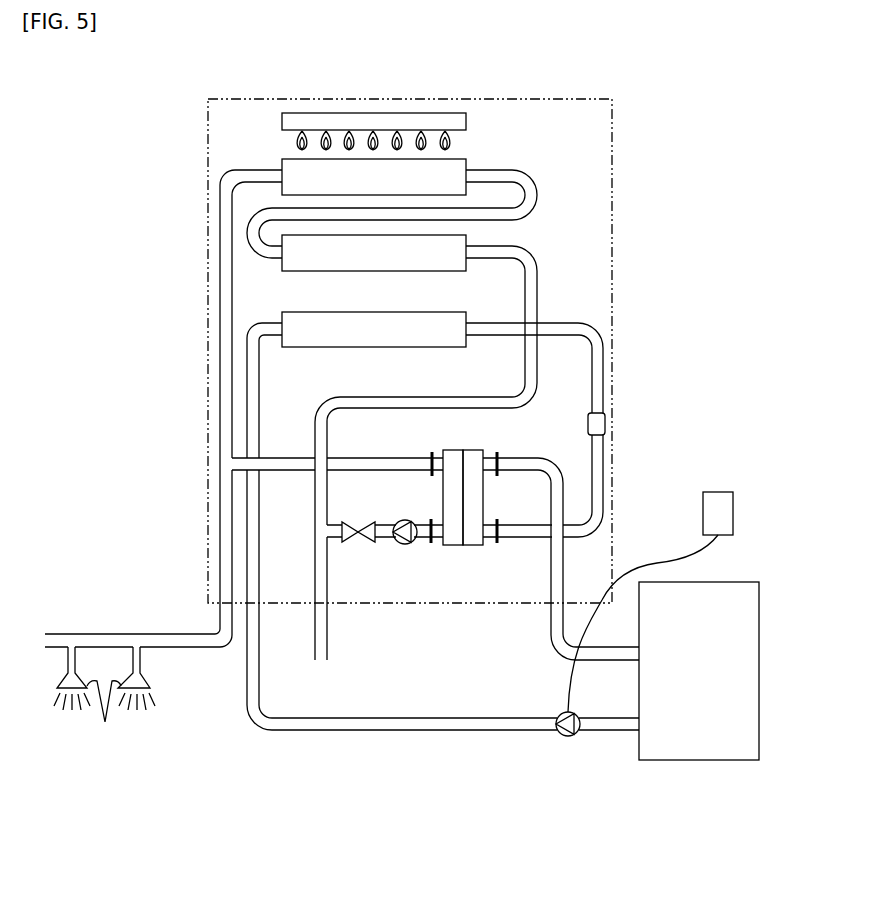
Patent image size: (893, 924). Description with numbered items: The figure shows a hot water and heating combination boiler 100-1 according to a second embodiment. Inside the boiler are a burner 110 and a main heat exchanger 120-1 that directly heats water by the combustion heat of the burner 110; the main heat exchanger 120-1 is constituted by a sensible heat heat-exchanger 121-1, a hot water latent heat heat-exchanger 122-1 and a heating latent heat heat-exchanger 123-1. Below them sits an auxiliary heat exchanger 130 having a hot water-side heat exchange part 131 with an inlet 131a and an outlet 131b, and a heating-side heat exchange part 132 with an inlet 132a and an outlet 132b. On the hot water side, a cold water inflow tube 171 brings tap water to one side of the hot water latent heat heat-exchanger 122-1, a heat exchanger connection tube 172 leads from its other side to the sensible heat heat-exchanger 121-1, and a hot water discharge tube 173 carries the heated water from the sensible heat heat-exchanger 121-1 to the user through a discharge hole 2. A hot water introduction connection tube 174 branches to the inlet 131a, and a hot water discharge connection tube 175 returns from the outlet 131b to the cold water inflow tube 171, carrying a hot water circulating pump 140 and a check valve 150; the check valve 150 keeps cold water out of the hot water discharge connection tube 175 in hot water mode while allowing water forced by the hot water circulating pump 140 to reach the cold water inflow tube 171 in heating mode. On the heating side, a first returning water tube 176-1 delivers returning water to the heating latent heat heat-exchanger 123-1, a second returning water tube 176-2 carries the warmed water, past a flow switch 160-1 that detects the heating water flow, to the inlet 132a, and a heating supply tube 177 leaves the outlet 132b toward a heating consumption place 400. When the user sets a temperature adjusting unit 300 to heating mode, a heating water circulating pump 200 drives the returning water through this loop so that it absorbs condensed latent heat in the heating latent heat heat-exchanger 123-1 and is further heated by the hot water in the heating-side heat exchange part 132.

The discharge hole 2 is at (104, 697).
The hot water and heating combination boiler 100-1 is at (208, 108).
The burner 110 is at (417, 118).
The main heat exchanger 120-1 is at (254, 253).
The sensible heat heat-exchanger 121-1 is at (215, 172).
The hot water latent heat heat-exchanger 122-1 is at (262, 235).
The heating latent heat heat-exchanger 123-1 is at (282, 312).
The auxiliary heat exchanger 130 is at (557, 500).
The hot water-side heat exchange part 131 is at (455, 483).
The inlet of hot water-side heat exchange part 131a is at (432, 460).
The outlet of hot water-side heat exchange part 131b is at (437, 540).
The heating-side heat exchange part 132 is at (475, 507).
The inlet of heating-side heat exchange part 132a is at (493, 540).
The outlet of heating-side heat exchange part 132b is at (490, 460).
The hot water circulating pump 140 is at (399, 522).
The check valve 150 is at (345, 522).
The flow switch 160-1 is at (605, 423).
The cold water inflow tube 171 is at (313, 497).
The heat exchanger connection tube 172 is at (537, 190).
The hot water discharge tube 173 is at (220, 330).
The hot water introduction connection tube 174 is at (278, 455).
The hot water discharge connection tube 175 is at (385, 540).
The first returning water tube 176-1 is at (252, 570).
The second returning water tube 176-2 is at (603, 362).
The heating supply tube 177 is at (553, 575).
The heating water circulating pump 200 is at (568, 737).
The temperature adjusting unit 300 is at (717, 490).
The heating consumption place 400 is at (693, 760).